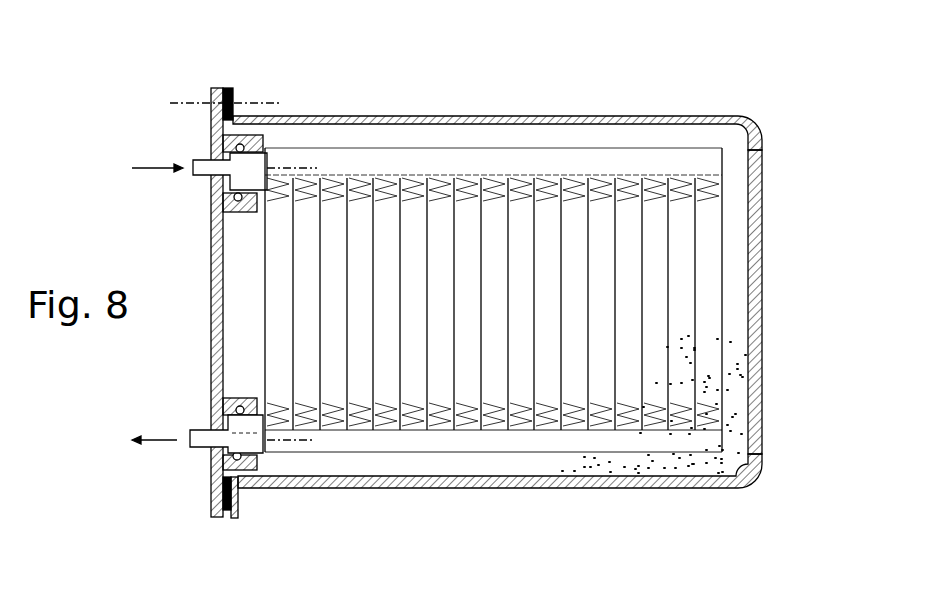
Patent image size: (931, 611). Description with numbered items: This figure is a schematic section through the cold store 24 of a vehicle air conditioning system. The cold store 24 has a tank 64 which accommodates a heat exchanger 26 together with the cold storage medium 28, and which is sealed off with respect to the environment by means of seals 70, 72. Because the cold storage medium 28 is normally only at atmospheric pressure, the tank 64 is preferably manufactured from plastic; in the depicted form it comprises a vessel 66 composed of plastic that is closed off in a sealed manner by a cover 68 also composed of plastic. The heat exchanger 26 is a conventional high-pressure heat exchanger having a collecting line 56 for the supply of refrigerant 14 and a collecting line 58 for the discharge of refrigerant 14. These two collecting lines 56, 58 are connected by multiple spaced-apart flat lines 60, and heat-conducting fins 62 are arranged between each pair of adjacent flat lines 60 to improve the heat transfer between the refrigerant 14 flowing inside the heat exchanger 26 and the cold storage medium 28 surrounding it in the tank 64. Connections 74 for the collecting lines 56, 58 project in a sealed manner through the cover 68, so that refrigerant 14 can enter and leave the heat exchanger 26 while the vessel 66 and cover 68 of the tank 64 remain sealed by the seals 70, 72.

The refrigerant 14 is at (155, 166).
The cold store 24 is at (620, 522).
The heat exchanger 26 is at (700, 143).
The cold storage medium 28 is at (742, 448).
The collecting line 56 is at (503, 148).
The collecting line 58 is at (418, 443).
The flat lines 60 is at (665, 370).
The heat-conducting fins 62 is at (660, 192).
The tank 64 is at (487, 488).
The vessel 66 is at (757, 300).
The cover 68 is at (211, 362).
The seal 70 is at (235, 96).
The seal 72 is at (248, 145).
The connections 74 is at (197, 178).